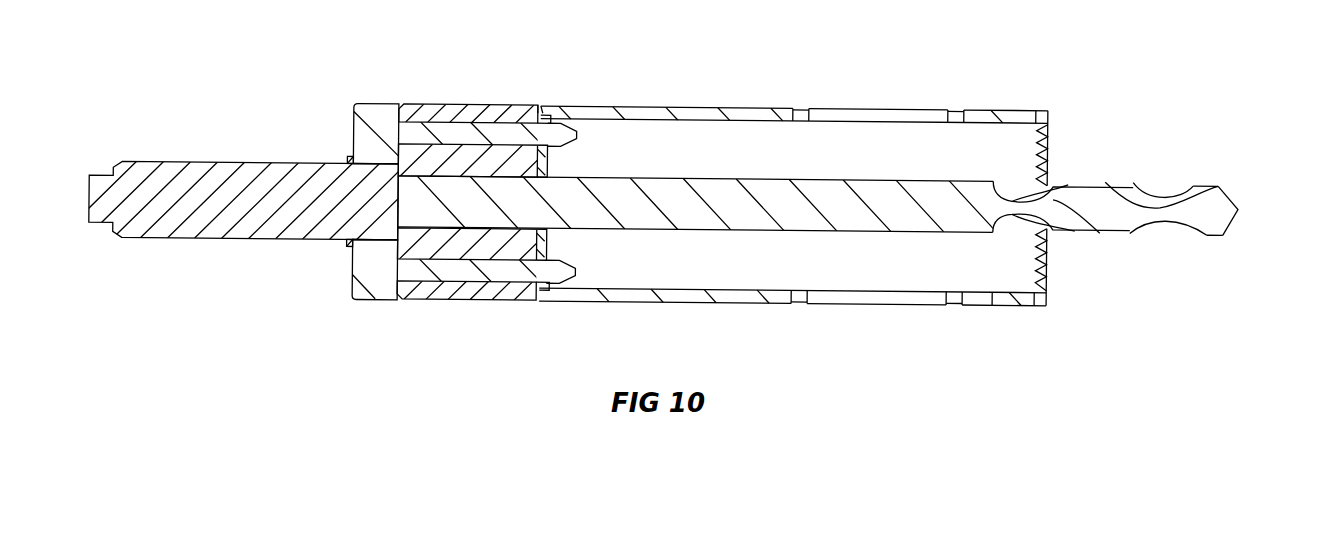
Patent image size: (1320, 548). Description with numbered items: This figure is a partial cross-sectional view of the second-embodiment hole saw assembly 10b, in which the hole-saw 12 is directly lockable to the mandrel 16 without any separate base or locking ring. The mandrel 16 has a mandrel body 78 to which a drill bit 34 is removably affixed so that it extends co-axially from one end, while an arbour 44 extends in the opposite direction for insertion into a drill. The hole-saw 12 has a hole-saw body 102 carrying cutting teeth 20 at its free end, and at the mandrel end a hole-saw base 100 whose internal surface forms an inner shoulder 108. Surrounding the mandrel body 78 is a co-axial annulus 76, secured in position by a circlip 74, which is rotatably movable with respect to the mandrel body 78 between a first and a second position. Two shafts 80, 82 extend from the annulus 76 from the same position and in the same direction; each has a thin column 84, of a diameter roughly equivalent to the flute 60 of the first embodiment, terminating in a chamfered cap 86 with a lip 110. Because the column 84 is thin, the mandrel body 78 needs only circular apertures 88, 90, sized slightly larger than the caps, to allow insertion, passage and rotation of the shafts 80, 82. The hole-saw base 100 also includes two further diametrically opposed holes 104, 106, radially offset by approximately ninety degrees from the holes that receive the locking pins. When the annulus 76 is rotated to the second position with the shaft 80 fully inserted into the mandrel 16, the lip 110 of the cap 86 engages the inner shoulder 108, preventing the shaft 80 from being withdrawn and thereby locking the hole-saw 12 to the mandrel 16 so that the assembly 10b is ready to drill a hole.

The hole saw assembly 10b is at (885, 94).
The hole-saw 12 is at (859, 305).
The mandrel 16 is at (477, 318).
The cutting teeth 20 is at (1053, 276).
The drill bit 34 is at (1095, 196).
The arbour 44 is at (203, 172).
The flute 60 is at (259, 305).
The circlip 74 is at (347, 249).
The annulus 76 is at (378, 289).
The mandrel body 78 is at (532, 288).
The shaft 80 is at (451, 112).
The shaft 82 is at (433, 290).
The column 84 is at (495, 136).
The chamfered cap 86 is at (565, 136).
The circular aperture 88 is at (403, 107).
The circular aperture 90 is at (502, 286).
The hole-saw base 100 is at (556, 239).
The hole-saw body 102 is at (993, 302).
The hole 104 is at (537, 107).
The hole 106 is at (550, 288).
The inner shoulder 108 is at (560, 141).
The lip 110 is at (547, 123).